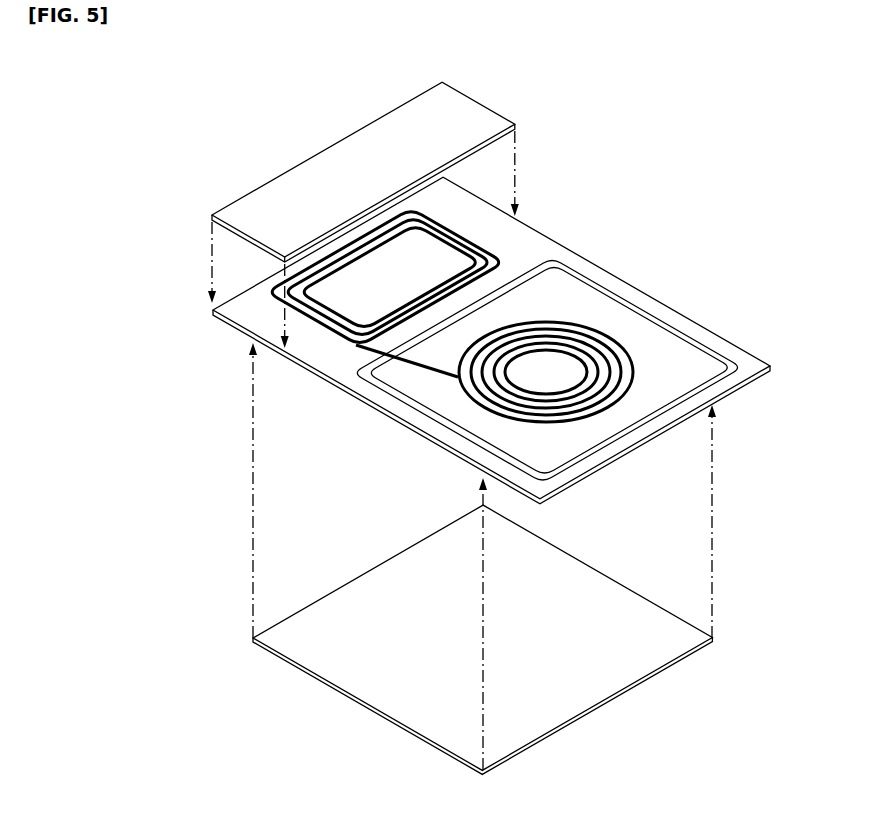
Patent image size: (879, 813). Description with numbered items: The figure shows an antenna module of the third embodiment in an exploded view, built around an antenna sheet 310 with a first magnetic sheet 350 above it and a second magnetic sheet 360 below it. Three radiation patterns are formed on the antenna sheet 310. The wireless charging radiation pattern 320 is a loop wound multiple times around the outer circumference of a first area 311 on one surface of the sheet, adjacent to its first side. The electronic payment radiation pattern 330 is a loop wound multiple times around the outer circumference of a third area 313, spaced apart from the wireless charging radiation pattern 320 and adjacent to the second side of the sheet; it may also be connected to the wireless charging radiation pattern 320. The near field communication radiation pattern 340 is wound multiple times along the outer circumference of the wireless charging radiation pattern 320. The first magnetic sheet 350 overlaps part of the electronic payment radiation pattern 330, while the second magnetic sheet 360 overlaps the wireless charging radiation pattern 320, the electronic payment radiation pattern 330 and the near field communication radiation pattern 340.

The antenna sheet 310 is at (550, 247).
The first area 311 is at (547, 370).
The third area 313 is at (372, 270).
The wireless charging radiation pattern 320 is at (617, 337).
The electronic payment radiation pattern 330 is at (455, 228).
The near field communication radiation pattern 340 is at (587, 273).
The first magnetic sheet 350 is at (328, 162).
The second magnetic sheet 360 is at (662, 620).